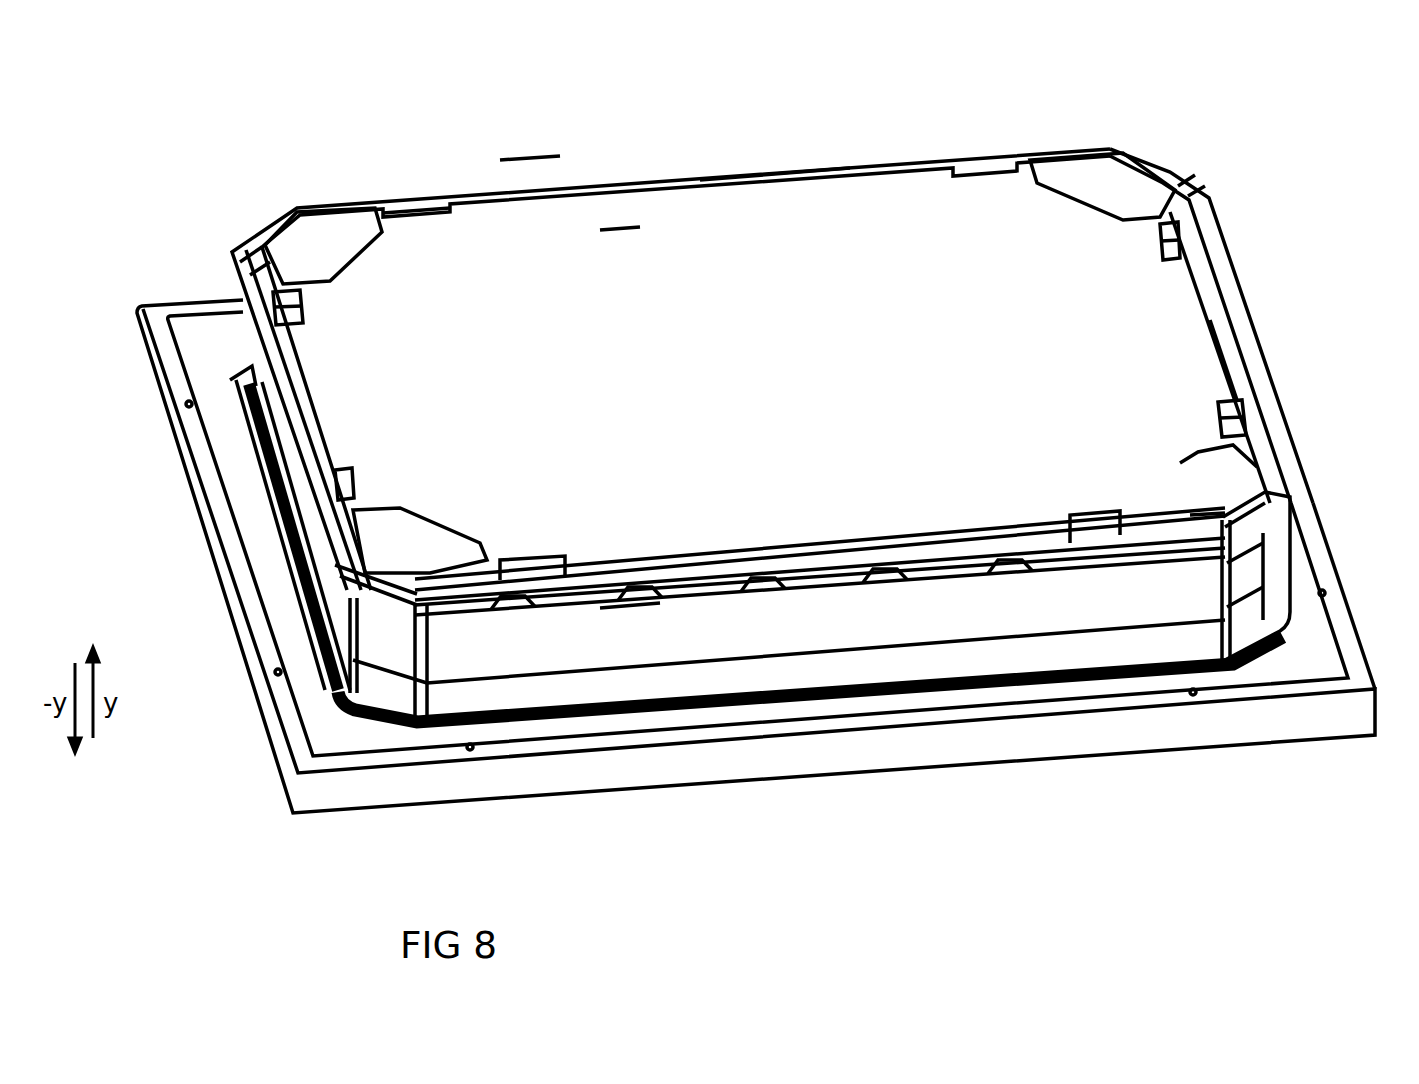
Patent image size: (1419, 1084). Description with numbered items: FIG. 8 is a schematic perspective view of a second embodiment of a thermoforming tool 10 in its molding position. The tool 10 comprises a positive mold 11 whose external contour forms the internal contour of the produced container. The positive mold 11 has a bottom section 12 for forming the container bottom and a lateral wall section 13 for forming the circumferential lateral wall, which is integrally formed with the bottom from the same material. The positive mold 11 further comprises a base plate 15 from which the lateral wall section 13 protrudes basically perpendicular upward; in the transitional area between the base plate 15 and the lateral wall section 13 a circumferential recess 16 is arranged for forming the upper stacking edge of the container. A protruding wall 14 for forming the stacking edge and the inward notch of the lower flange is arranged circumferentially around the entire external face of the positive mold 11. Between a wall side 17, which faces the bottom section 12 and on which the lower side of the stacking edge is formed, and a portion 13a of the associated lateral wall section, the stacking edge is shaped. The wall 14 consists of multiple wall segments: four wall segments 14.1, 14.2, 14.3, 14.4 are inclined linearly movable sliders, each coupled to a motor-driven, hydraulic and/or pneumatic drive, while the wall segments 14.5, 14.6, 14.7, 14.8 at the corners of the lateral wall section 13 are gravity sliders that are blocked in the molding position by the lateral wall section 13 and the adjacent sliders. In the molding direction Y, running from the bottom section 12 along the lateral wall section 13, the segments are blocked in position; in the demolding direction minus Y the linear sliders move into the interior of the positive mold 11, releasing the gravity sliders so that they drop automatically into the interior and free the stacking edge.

The tool 10 is at (527, 154).
The positive mold 11 is at (616, 224).
The bottom section 12 is at (775, 195).
The lateral wall section 13 is at (873, 628).
The portion of the lateral wall section 13a is at (760, 580).
The wall 14 is at (1222, 278).
The wall segment 14.1 is at (270, 420).
The wall segment 14.2 is at (437, 200).
The wall segment 14.3 is at (1238, 356).
The wall segment 14.4 is at (637, 593).
The wall segment 14.5 is at (413, 603).
The wall segment 14.6 is at (297, 233).
The wall segment 14.7 is at (1123, 182).
The wall segment 14.8 is at (1203, 500).
The base plate 15 is at (953, 750).
The circumferential recess 16 is at (1272, 602).
The wall side 17 is at (320, 233).